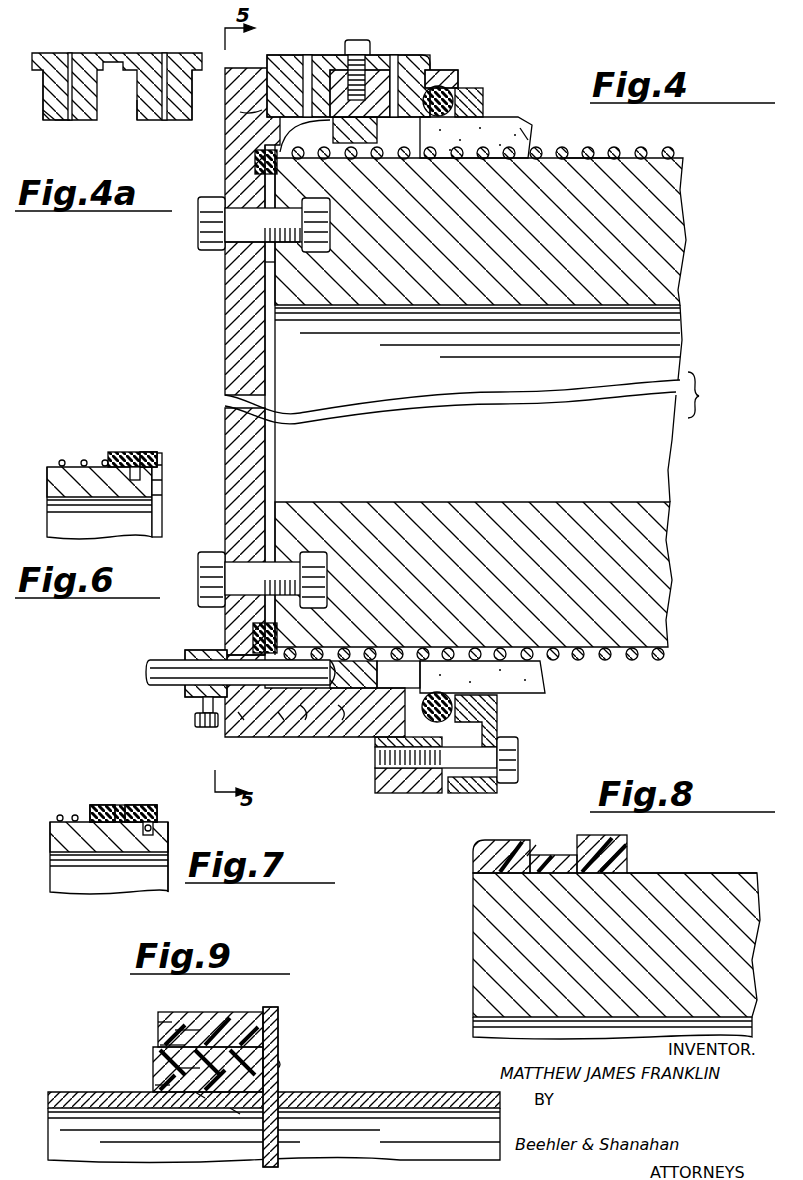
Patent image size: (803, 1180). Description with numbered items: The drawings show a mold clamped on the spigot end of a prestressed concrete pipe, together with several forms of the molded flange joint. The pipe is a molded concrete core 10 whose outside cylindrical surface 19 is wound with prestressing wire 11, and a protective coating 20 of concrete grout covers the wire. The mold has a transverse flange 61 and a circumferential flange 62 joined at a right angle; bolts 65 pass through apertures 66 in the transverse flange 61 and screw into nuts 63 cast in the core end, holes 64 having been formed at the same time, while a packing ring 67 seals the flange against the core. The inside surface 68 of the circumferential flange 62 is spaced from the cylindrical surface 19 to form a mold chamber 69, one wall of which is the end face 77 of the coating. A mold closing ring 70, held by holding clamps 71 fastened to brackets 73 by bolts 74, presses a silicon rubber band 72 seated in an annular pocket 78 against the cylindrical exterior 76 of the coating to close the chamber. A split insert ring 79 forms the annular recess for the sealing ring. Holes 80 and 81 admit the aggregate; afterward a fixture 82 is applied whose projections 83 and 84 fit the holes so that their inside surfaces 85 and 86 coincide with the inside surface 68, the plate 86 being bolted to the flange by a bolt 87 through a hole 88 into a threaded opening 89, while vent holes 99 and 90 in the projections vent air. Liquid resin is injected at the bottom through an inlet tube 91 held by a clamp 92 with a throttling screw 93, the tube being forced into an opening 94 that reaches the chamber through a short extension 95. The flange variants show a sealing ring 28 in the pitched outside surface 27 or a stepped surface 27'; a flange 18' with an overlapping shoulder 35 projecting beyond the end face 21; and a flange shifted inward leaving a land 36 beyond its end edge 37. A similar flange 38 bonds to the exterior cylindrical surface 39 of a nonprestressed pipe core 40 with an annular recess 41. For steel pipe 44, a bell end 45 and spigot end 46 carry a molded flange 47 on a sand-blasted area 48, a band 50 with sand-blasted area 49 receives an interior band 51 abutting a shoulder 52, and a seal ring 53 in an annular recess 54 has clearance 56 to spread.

In FIG. 4, the molded concrete core 10 is at (682, 232).
In FIG. 6, the molded concrete core 10 is at (78, 470).
In FIG. 7, the molded concrete core 10 is at (56, 826).
In FIG. 4, the prestressing wire 11 is at (588, 152).
In FIG. 4, the outside cylindrical surface 19 is at (545, 152).
In FIG. 4, the protective coating 20 is at (526, 136).
In FIG. 6, the end face 21 is at (162, 492).
In FIG. 7, the end face 21 is at (168, 836).
In FIG. 6, the flange 18' is at (168, 449).
In FIG. 8, the outside surface 27 is at (613, 840).
In FIG. 8, the stepped surface 27' is at (547, 822).
In FIG. 6, the annular sealing ring 28 is at (132, 452).
In FIG. 7, the annular sealing ring 28 is at (122, 805).
In FIG. 6, the overlapping shoulder 35 is at (162, 470).
In FIG. 7, the unoccupied land 36 is at (155, 828).
In FIG. 7, the end edge 37 is at (150, 806).
In FIG. 8, the flange 38 is at (500, 845).
In FIG. 8, the exterior cylindrical surface 39 is at (646, 873).
In FIG. 8, the molded concrete pipe core 40 is at (722, 880).
In FIG. 8, the annular recess 41 is at (555, 855).
In FIG. 9, the steel pipe 44 is at (78, 1092).
In FIG. 9, the bell end 45 is at (250, 1010).
In FIG. 9, the spigot end 46 is at (236, 1112).
In FIG. 9, the flange 47 is at (158, 1056).
In FIG. 9, the sand-blasted area 48 is at (158, 1085).
In FIG. 9, the sand-blasted area 49 is at (185, 1016).
In FIG. 9, the band 50 is at (208, 1012).
In FIG. 9, the interior band 51 is at (160, 1011).
In FIG. 9, the shoulder 52 is at (280, 1063).
In FIG. 9, the seal ring 53 is at (200, 1095).
In FIG. 9, the annular recess 54 is at (172, 1066).
In FIG. 9, the clearance 56 is at (160, 1040).
In FIG. 4, the transverse flange 61 is at (226, 90).
In FIG. 4, the circumferential flange 62 is at (322, 740).
In FIG. 4, the nuts 63 is at (310, 555).
In FIG. 4, the holes 64 is at (268, 263).
In FIG. 4, the bolts 65 is at (200, 235).
In FIG. 4, the apertures 66 is at (250, 246).
In FIG. 4, the packing ring 67 is at (254, 160).
In FIG. 4, the inside surface 68 is at (378, 742).
In FIG. 4, the mold chamber 69 is at (278, 136).
In FIG. 4, the mold closing ring 70 is at (455, 97).
In FIG. 4, the holding clamps 71 is at (460, 792).
In FIG. 4, the band 72 is at (471, 88).
In FIG. 4, the brackets 73 is at (375, 793).
In FIG. 4, the bolts 74 is at (520, 762).
In FIG. 4, the cylindrical exterior 76 is at (480, 118).
In FIG. 4, the end face 77 is at (420, 131).
In FIG. 4, the annular pocket 78 is at (445, 68).
In FIG. 4, the split insert ring 79 is at (305, 720).
In FIG. 4, the hole 80 is at (262, 110).
In FIG. 4, the hole 81 is at (386, 72).
In FIG. 4, the fixture 82 is at (298, 48).
In FIG. 4A, the fixture 82 is at (102, 45).
In FIG. 4A, the projection 83 is at (48, 118).
In FIG. 4A, the projection 84 is at (142, 118).
In FIG. 4A, the inside surface 85 is at (65, 122).
In FIG. 4A, the plate 86 is at (155, 60).
In FIG. 4, the bolt 87 is at (357, 40).
In FIG. 4A, the hole 88 is at (112, 60).
In FIG. 4, the threaded opening 89 is at (314, 58).
In FIG. 4, the vent hole 90 is at (396, 62).
In FIG. 4A, the vent hole 90 is at (170, 62).
In FIG. 4, the inlet tube 91 is at (150, 673).
In FIG. 4, the clamp 92 is at (185, 690).
In FIG. 4, the throttling screw 93 is at (195, 720).
In FIG. 4, the opening 94 is at (240, 715).
In FIG. 4, the short extension 95 is at (280, 720).
In FIG. 4A, the vent hole 99 is at (70, 60).